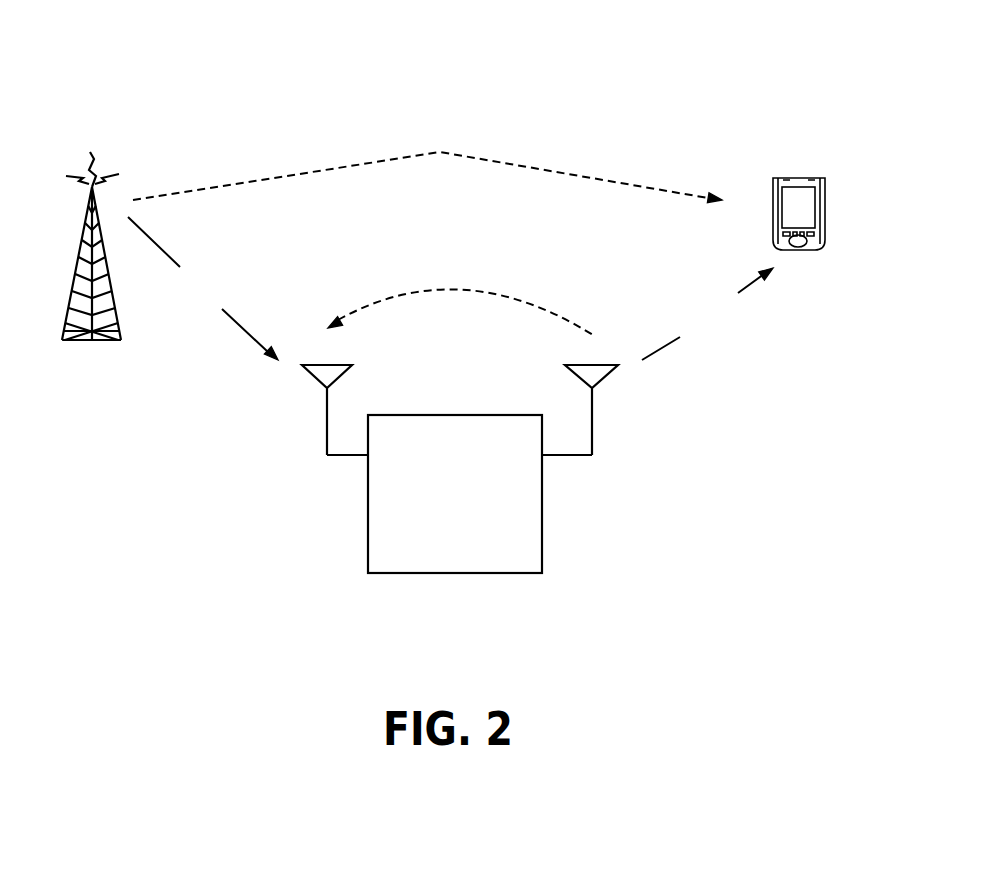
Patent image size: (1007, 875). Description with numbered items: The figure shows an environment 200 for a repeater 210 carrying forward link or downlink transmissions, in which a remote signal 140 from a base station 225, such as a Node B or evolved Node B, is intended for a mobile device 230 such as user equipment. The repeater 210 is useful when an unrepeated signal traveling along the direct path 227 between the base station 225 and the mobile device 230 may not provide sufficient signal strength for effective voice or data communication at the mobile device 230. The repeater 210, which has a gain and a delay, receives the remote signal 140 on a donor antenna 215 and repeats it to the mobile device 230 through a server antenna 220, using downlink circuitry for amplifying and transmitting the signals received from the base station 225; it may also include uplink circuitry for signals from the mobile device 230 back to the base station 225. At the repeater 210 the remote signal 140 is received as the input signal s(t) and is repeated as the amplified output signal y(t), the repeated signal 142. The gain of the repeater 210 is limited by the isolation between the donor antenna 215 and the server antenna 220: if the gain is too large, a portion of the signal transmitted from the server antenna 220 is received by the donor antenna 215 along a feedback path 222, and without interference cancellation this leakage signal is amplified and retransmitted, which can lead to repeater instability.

The environment 200 is at (712, 88).
The base station 225 is at (104, 342).
The remote signal 140 is at (166, 251).
The path 227 is at (551, 170).
The feedback path 222 is at (489, 294).
The donor antenna 215 is at (343, 375).
The server antenna 220 is at (574, 373).
The repeater 210 is at (475, 574).
The repeated signal 142 is at (748, 285).
The mobile device 230 is at (793, 177).